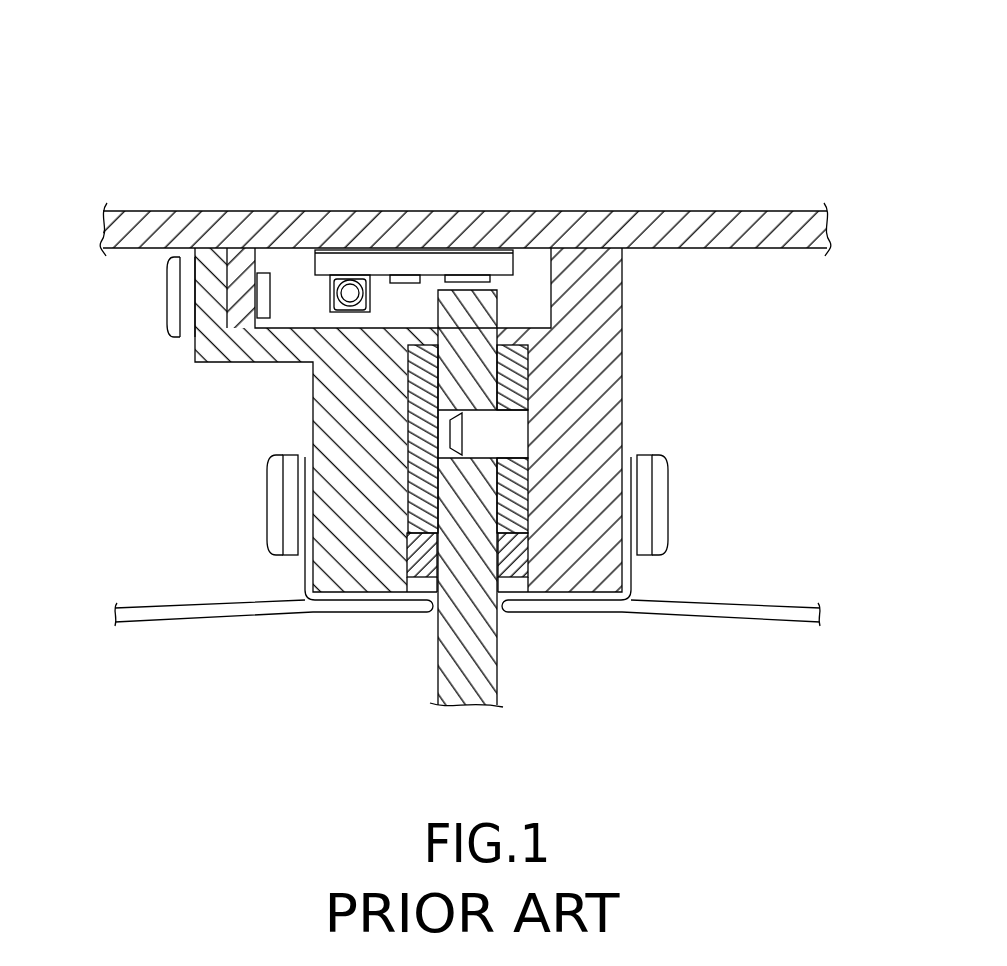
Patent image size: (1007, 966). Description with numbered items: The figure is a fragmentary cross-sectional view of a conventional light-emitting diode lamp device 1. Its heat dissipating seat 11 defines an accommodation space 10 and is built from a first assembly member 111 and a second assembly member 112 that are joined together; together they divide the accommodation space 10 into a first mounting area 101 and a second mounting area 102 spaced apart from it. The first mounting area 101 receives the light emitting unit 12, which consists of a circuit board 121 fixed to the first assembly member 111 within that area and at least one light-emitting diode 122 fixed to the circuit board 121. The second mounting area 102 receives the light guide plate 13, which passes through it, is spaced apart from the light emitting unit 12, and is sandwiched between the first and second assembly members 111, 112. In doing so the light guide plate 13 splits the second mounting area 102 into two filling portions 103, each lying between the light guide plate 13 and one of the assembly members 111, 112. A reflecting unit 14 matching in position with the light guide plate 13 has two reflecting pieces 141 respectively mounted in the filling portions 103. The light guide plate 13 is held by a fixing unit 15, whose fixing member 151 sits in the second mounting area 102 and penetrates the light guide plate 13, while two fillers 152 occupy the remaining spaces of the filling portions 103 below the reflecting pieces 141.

The light-emitting diode (LED) lamp device 1 is at (342, 125).
The accommodation space 10 is at (385, 332).
The first mounting area 101 is at (537, 263).
The second mounting area 102 is at (375, 555).
The filling portions 103 is at (420, 420).
The heat dissipating seat 11 is at (168, 182).
The first assembly member 111 is at (622, 335).
The second assembly member 112 is at (207, 347).
The light emitting unit 12 is at (292, 238).
The circuit board 121 is at (438, 258).
The light-emitting diode 122 is at (490, 281).
The light guide plate 13 is at (490, 390).
The reflecting unit 14 is at (461, 466).
The reflecting pieces 141 is at (517, 360).
The fixing unit 15 is at (546, 574).
The fixing member 151 is at (518, 433).
The fillers 152 is at (418, 578).